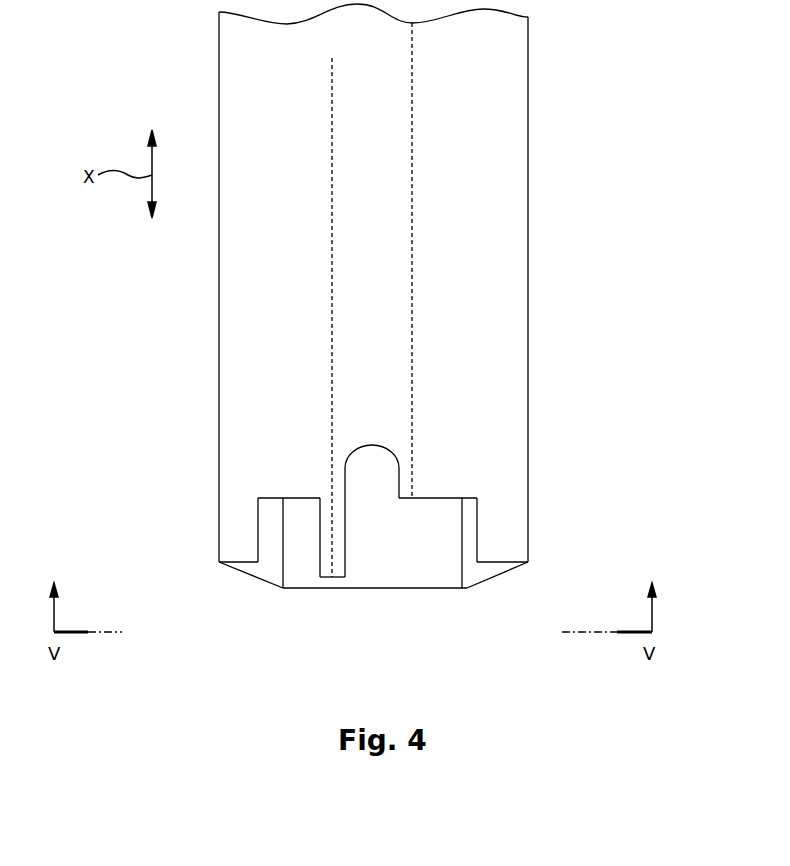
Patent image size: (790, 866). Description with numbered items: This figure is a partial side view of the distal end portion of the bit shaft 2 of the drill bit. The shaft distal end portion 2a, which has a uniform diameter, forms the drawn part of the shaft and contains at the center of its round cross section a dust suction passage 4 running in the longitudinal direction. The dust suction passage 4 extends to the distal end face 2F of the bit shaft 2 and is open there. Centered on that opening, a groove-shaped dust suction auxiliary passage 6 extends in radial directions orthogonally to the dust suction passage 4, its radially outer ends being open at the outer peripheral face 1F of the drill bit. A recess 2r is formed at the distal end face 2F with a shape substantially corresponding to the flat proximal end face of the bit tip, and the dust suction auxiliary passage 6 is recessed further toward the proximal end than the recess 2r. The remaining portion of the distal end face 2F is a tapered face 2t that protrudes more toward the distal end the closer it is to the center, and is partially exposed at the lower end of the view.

The bit shaft 2 is at (530, 191).
The shaft distal end portion 2a is at (230, 312).
The dust suction passage 4 is at (378, 343).
The dust suction auxiliary passage 6 is at (378, 469).
The outer peripheral face 1F is at (317, 459).
The recess 2r is at (300, 500).
The distal end face 2F is at (422, 500).
The tapered face 2t is at (255, 570).